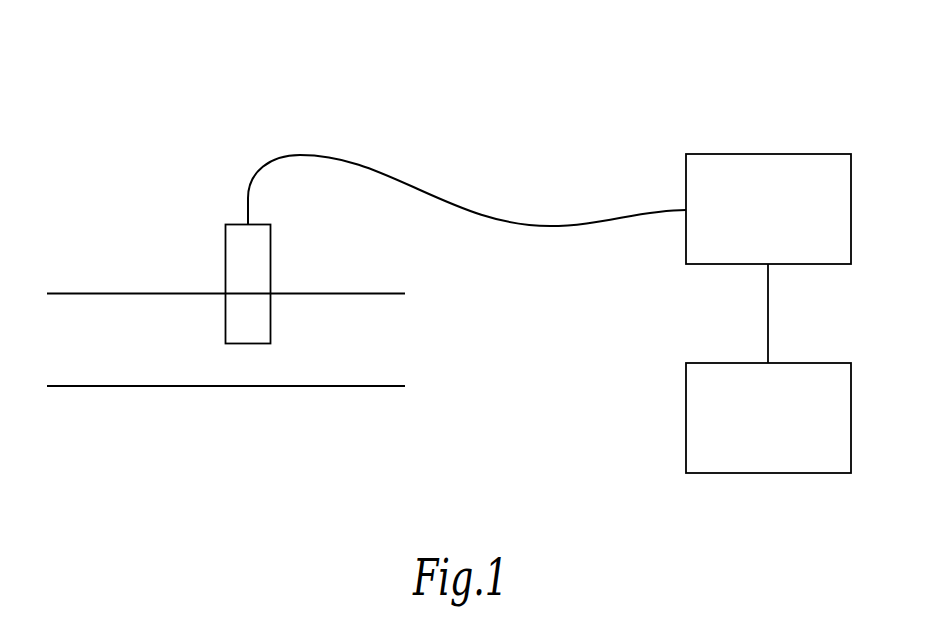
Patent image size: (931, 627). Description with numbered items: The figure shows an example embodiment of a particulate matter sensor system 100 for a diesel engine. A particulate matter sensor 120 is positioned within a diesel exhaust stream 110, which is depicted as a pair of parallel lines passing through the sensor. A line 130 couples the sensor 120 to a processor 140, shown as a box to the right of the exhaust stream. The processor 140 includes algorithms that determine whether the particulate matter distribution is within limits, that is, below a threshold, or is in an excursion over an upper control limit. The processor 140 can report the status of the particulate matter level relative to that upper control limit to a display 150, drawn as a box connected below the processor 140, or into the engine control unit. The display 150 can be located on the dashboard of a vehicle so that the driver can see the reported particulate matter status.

The particulate matter sensor system 100 is at (123, 77).
The diesel exhaust stream 110 is at (138, 292).
The particulate matter sensor 120 is at (230, 222).
The line 130 is at (522, 222).
The processor 140 is at (831, 152).
The display 150 is at (831, 362).